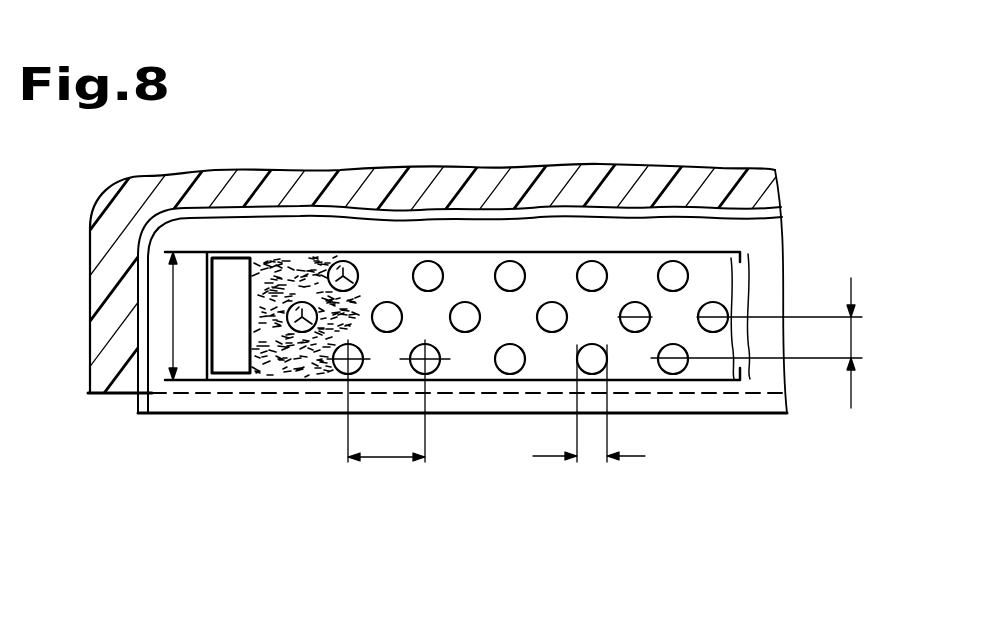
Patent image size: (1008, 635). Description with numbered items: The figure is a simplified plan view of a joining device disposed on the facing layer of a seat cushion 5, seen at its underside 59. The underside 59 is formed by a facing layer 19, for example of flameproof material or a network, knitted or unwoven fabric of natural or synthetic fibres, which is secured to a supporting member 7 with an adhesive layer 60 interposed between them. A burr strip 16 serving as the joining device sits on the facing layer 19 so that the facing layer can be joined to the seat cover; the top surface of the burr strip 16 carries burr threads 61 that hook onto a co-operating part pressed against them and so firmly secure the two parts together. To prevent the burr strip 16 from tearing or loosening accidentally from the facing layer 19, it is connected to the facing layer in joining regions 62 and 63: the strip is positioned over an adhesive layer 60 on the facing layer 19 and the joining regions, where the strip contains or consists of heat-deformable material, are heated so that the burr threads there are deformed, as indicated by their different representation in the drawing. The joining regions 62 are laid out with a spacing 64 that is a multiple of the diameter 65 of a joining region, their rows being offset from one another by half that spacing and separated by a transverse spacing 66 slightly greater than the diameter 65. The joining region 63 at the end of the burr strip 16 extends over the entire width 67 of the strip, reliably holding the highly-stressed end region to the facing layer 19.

The seat cushion 5 is at (763, 104).
The supporting member 7 is at (512, 173).
The burr strip 16 is at (707, 264).
The facing layer 19 is at (658, 230).
The underside 59 is at (720, 230).
The adhesive layer 60 is at (368, 217).
The burr threads 61 is at (283, 372).
The joining regions 62 is at (442, 355).
The joining region 63 is at (228, 377).
The spacing 64 is at (383, 460).
The diameter 65 is at (593, 457).
The transverse spacing 66 is at (853, 330).
The width 67 is at (172, 323).